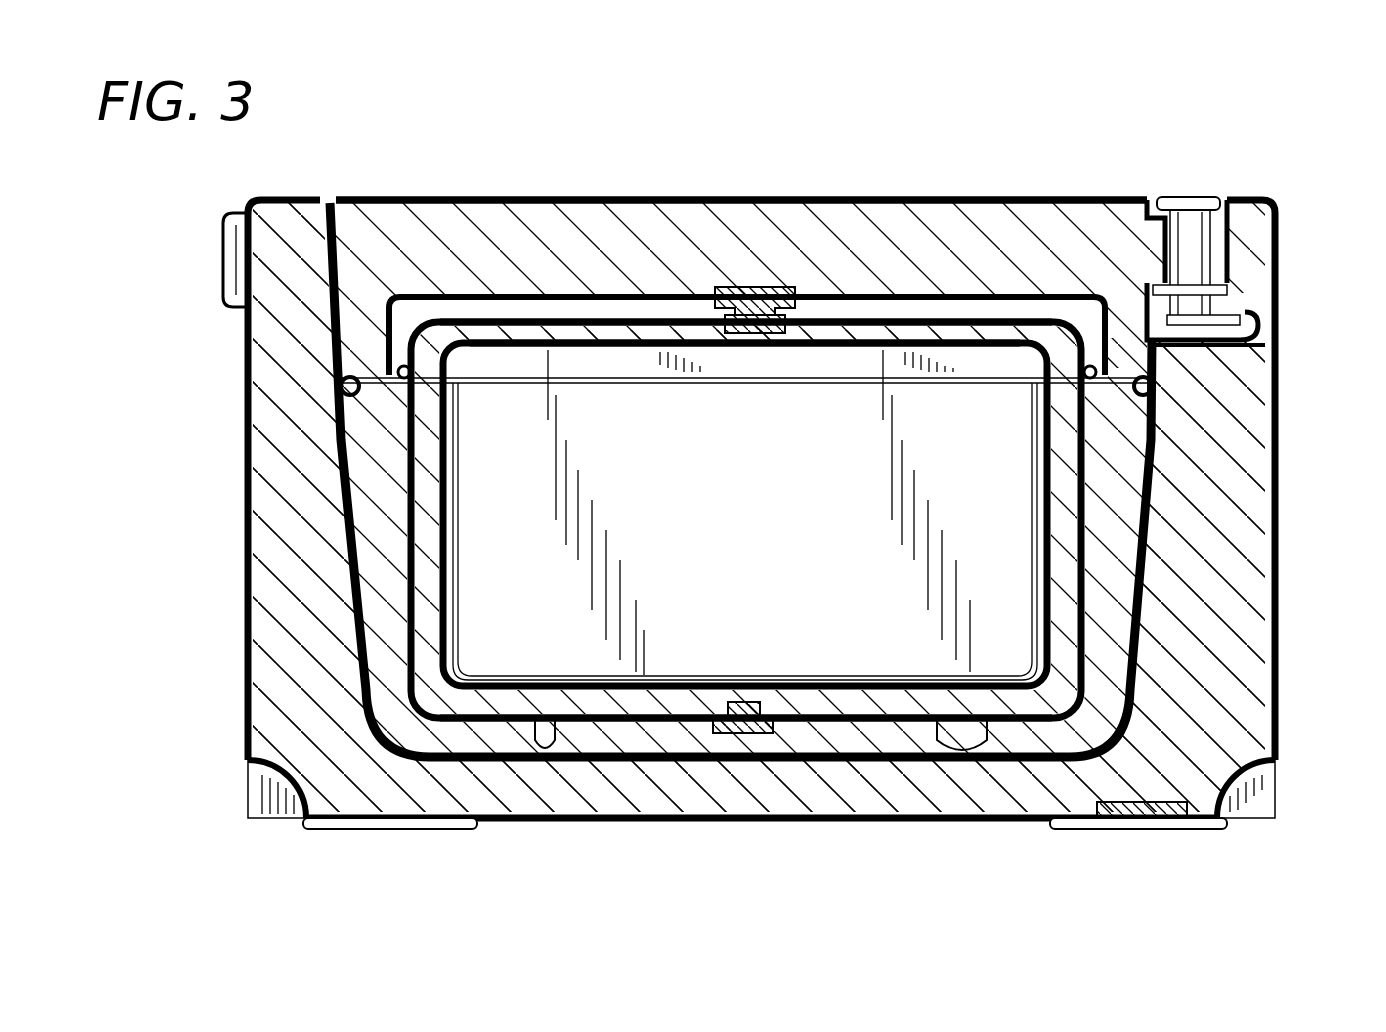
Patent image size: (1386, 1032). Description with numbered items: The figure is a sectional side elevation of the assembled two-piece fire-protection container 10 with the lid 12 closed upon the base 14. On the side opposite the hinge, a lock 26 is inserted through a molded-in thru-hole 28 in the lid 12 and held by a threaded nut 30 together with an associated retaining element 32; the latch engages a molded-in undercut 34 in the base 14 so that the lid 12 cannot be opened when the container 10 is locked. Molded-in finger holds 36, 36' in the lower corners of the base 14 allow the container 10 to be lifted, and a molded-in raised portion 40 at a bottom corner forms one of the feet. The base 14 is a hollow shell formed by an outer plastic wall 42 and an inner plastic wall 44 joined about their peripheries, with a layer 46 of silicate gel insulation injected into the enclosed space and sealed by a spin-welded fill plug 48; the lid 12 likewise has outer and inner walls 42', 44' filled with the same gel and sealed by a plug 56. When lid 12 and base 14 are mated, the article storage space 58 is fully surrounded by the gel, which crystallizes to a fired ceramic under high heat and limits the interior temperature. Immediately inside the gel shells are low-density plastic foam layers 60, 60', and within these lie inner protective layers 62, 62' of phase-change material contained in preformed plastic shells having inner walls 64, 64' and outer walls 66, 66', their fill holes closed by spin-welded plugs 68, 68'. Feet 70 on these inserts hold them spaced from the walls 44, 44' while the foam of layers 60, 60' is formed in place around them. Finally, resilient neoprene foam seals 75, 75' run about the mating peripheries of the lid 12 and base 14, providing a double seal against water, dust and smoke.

The fire-protection container 10 is at (238, 524).
The lid 12 is at (705, 165).
The base 14 is at (704, 845).
The lock 26 is at (1185, 213).
The thru-hole 28 is at (1216, 184).
The threaded nut 30 is at (1200, 290).
The retaining washer 32 is at (1245, 320).
The undercut 34 is at (1235, 343).
The finger hold 36 is at (210, 803).
The finger hold 36' is at (1294, 789).
The raised portion 40 is at (370, 830).
The outer plastic wall 42 is at (761, 857).
The outer wall 42' is at (741, 167).
The inner plastic wall 44 is at (797, 550).
The inner wall 44' is at (747, 251).
The layer of silicate gel insulation 46 is at (912, 228).
The fill plug 48 is at (1108, 822).
The plug 56 is at (780, 288).
The article storage space 58 is at (765, 550).
The layer 60 is at (746, 602).
The layer 60' is at (750, 204).
The inner protective layer 62 is at (746, 520).
The inner protective layer 62' is at (745, 388).
The inner wall 64 is at (745, 514).
The inner wall 64' is at (745, 392).
The outer wall 66 is at (746, 667).
The outer wall 66' is at (746, 227).
The plug 68 is at (743, 675).
The plug 68' is at (753, 386).
The feet 70 is at (965, 724).
The foam seal 75 is at (1221, 409).
The foam seal 75' is at (432, 404).